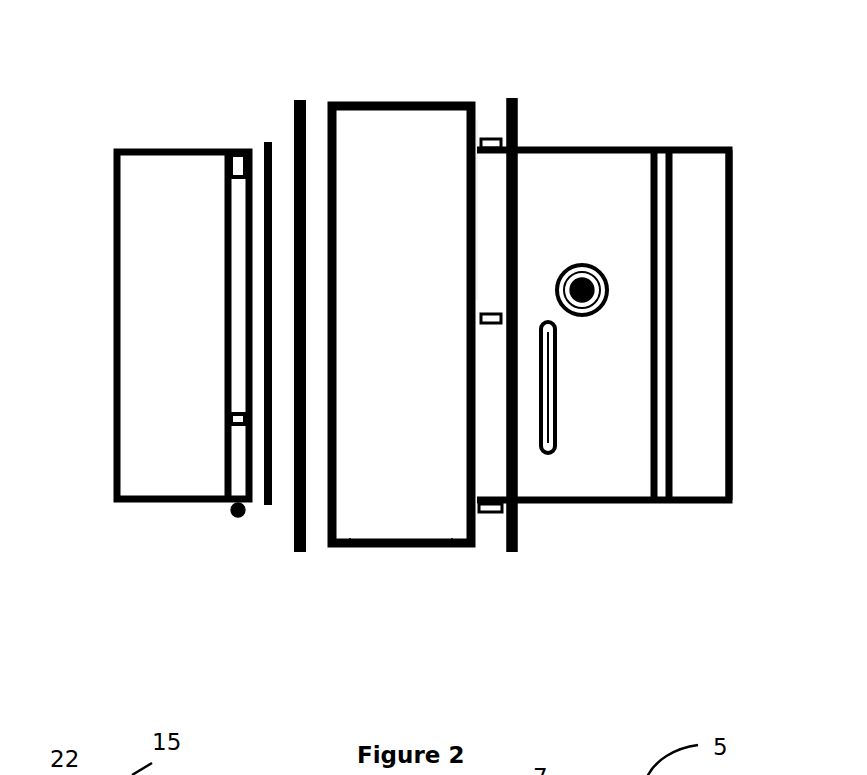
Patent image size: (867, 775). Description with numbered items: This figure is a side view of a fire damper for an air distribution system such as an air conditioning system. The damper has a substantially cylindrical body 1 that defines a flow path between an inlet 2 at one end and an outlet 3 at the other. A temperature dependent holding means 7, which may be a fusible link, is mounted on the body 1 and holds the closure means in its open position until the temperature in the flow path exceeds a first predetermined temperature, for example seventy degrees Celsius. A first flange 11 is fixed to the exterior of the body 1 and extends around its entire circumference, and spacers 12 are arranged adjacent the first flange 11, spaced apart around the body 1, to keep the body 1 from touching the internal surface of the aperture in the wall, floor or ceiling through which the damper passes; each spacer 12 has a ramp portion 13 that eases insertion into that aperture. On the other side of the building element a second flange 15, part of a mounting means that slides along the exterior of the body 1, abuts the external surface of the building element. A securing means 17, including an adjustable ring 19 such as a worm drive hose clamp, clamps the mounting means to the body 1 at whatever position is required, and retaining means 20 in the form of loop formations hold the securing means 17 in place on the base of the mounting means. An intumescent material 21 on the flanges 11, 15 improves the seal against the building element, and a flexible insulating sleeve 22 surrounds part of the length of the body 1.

The body 1 is at (551, 165).
The inlet 2 is at (730, 440).
The outlet 3 is at (113, 437).
The holding means 7 is at (588, 265).
The first flange 11 is at (517, 103).
The spacers 12 is at (497, 137).
The ramp portion 13 is at (485, 133).
The second flange 15 is at (292, 110).
The securing means 17 is at (229, 523).
The adjustable ring 19 is at (233, 157).
The retaining means 20 is at (233, 420).
The intumescent material 21 is at (313, 120).
The flexible insulating sleeve 22 is at (370, 532).